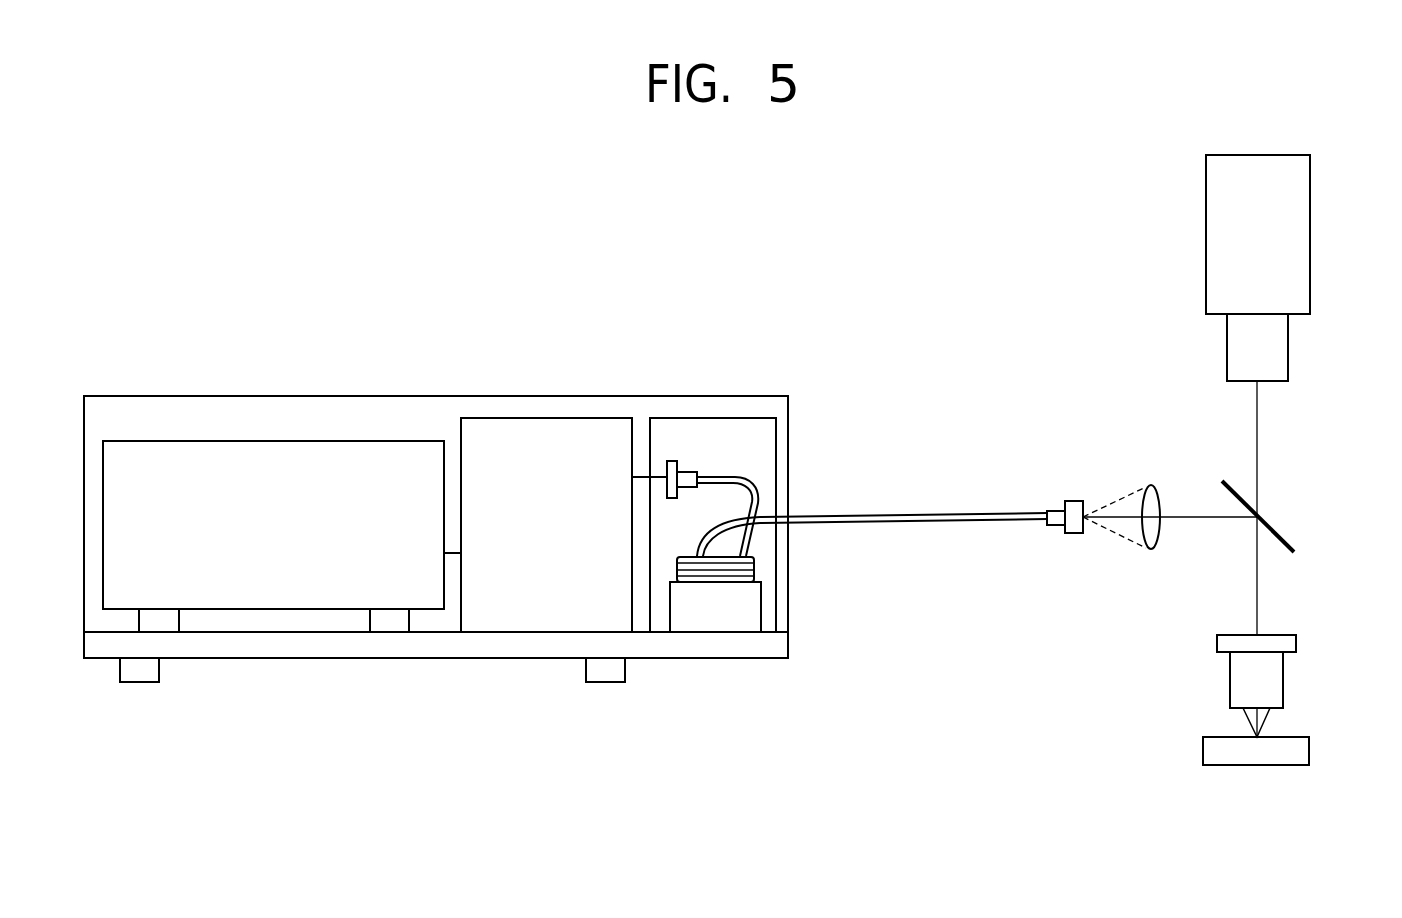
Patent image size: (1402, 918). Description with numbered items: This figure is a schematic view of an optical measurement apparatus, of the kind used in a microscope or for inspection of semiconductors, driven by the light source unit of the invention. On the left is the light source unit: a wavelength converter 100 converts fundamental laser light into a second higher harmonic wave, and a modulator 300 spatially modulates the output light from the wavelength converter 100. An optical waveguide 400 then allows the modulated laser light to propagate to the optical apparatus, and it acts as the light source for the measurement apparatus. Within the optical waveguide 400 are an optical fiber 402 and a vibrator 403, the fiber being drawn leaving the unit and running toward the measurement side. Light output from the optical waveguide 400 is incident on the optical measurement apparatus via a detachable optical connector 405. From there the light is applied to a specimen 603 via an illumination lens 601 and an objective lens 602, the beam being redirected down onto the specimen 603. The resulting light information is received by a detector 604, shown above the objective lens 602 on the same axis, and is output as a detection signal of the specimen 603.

The wavelength converter 100 is at (292, 538).
The modulator 300 is at (572, 532).
The optical waveguide 400 is at (739, 457).
The optical fiber 402 is at (913, 515).
The vibrator 403 is at (761, 606).
The detachable optical connector 405 is at (1078, 501).
The illumination lens 601 is at (1157, 495).
The objective lens 602 is at (1283, 682).
The specimen 603 is at (1309, 742).
The detector 604 is at (1310, 260).